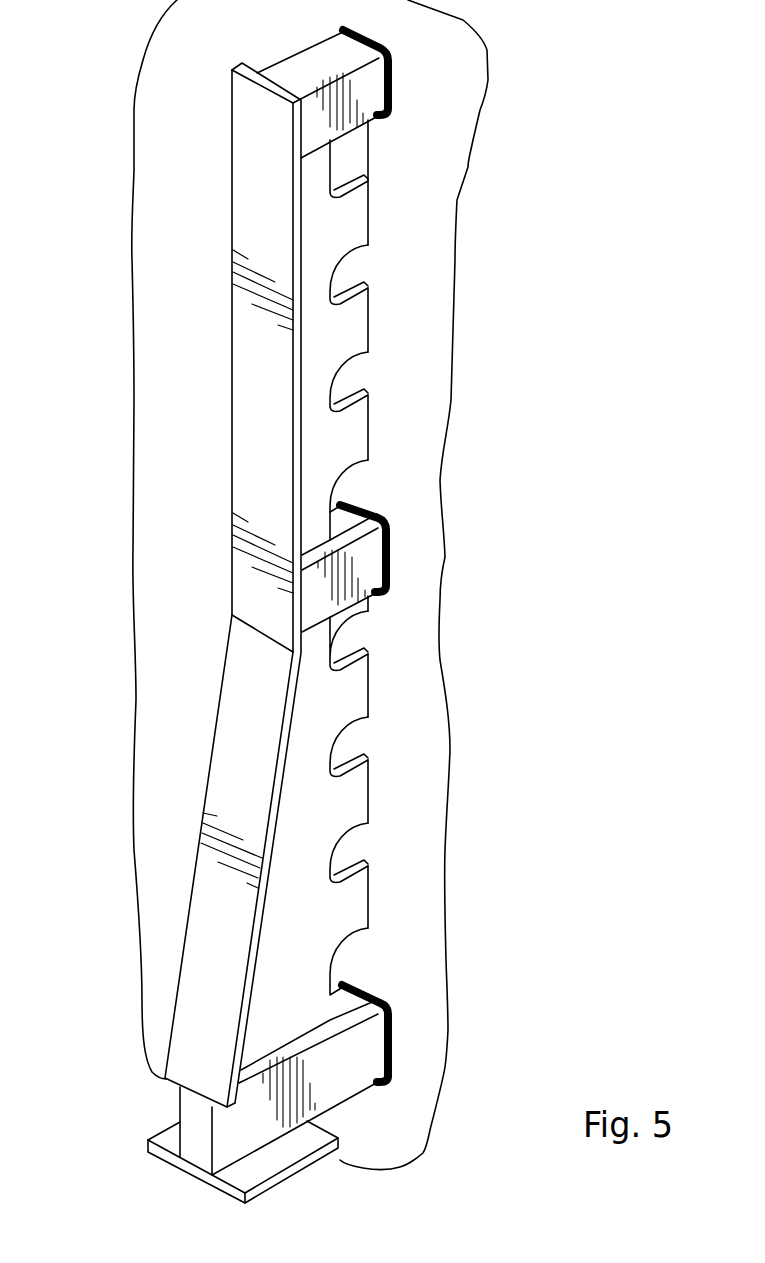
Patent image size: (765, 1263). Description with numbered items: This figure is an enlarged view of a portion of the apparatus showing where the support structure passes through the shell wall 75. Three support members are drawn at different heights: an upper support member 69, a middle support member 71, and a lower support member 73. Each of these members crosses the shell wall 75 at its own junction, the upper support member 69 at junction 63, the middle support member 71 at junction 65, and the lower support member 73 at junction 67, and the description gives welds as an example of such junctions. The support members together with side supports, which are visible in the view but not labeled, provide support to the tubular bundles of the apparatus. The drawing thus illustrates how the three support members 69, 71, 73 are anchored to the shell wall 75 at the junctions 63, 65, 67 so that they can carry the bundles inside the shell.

The junction 63 is at (390, 1033).
The junction 65 is at (387, 545).
The junction 67 is at (388, 62).
The upper support member 69 is at (317, 115).
The middle support member 71 is at (312, 595).
The lower support member 73 is at (230, 1140).
The shell wall 75 is at (142, 58).